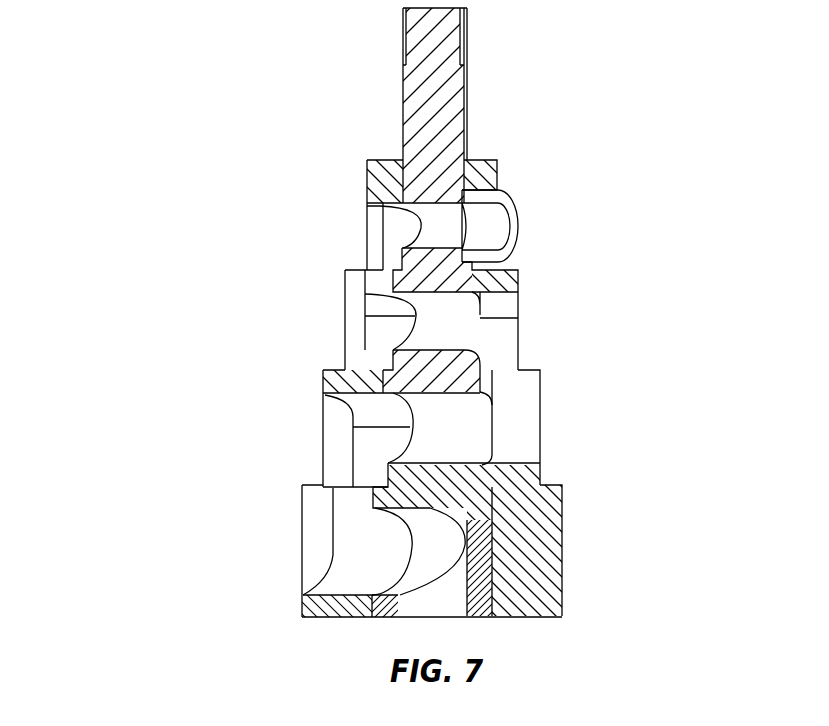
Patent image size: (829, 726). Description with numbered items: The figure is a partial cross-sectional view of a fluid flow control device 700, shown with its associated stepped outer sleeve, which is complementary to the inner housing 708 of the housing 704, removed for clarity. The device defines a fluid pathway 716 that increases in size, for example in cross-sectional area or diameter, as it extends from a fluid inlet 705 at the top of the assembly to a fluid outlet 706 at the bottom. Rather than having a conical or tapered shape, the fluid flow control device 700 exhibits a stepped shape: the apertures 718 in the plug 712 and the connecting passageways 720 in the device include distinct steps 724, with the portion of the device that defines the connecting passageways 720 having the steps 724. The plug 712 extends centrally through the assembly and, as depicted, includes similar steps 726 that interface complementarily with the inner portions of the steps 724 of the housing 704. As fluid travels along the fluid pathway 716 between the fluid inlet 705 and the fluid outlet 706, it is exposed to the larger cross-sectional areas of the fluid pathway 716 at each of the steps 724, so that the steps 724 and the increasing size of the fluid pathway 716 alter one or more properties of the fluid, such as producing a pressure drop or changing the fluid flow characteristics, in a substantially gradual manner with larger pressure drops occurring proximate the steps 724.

The fluid flow control device 700 is at (66, 98).
The housing 704 is at (317, 498).
The fluid inlet 705 is at (476, 242).
The fluid outlet 706 is at (450, 605).
The inner housing 708 is at (367, 162).
The plug 712 is at (467, 128).
The fluid pathway 716 is at (345, 506).
The apertures 718 is at (437, 240).
The connecting passageways 720 is at (370, 278).
The steps 724 is at (345, 370).
The steps 726 is at (345, 350).